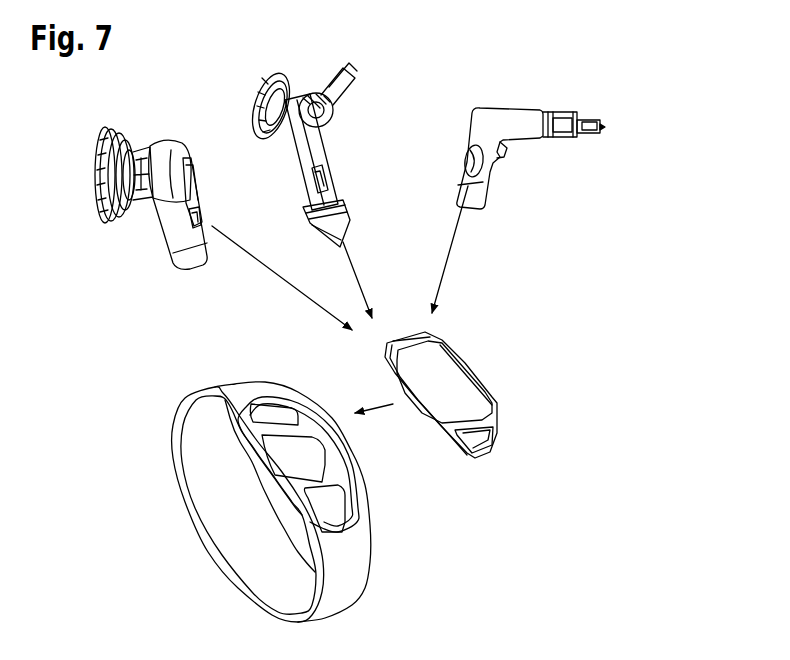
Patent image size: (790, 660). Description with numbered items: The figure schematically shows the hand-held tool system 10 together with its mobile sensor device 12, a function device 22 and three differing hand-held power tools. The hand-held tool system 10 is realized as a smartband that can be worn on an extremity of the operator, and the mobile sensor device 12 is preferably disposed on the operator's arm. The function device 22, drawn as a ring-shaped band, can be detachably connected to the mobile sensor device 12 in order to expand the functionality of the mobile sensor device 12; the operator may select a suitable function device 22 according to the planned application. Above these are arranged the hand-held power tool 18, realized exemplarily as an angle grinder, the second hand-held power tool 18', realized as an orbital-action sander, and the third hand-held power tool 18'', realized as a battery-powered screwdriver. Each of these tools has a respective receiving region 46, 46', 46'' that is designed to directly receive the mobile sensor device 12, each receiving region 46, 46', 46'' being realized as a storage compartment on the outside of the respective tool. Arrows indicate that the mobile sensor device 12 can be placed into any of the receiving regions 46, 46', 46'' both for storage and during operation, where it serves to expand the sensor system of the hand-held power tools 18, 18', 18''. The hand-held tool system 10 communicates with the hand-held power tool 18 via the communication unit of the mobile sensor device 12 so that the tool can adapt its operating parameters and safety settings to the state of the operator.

The hand-held tool system 10 is at (462, 517).
The mobile sensor device 12 is at (443, 363).
The hand-held power tool 18 is at (329, 151).
The second hand-held power tool 18' is at (186, 169).
The third hand-held power tool 18'' is at (525, 123).
The function device 22 is at (213, 497).
The receiving region 46 is at (357, 175).
The receiving region 46' is at (233, 212).
The receiving region 46'' is at (440, 147).